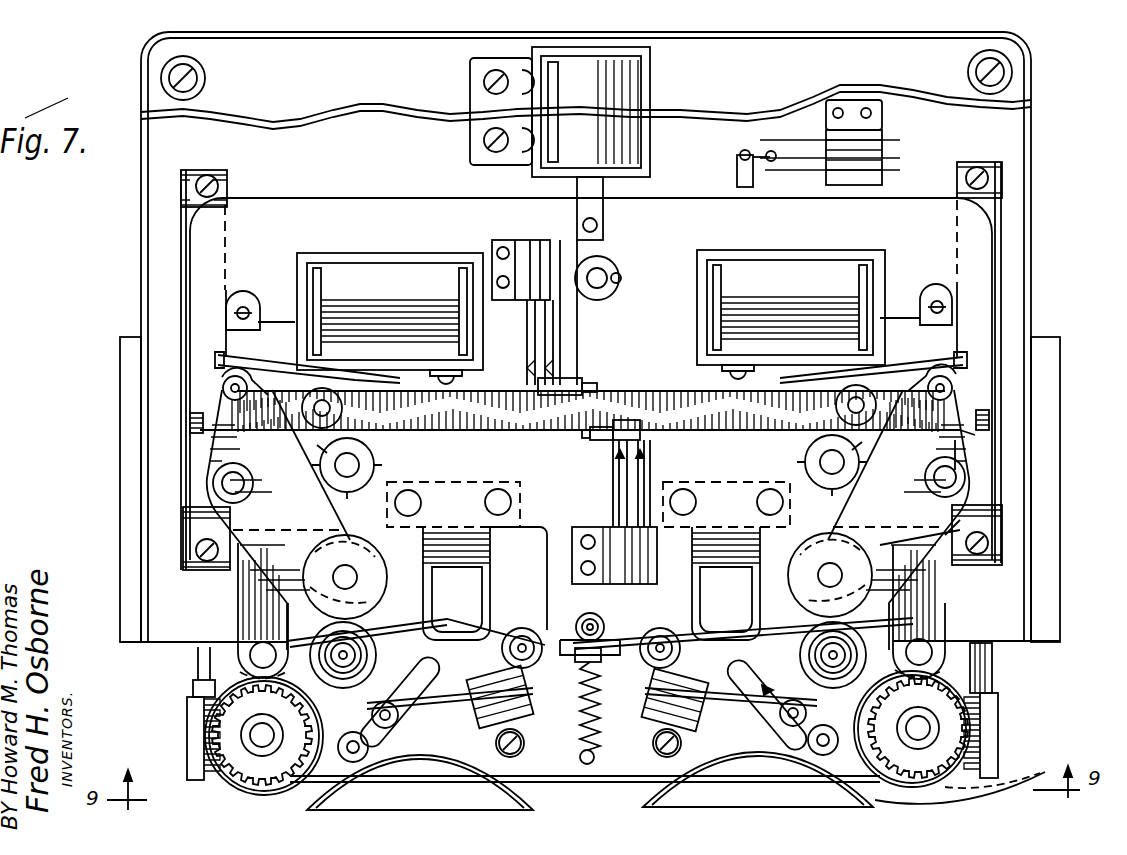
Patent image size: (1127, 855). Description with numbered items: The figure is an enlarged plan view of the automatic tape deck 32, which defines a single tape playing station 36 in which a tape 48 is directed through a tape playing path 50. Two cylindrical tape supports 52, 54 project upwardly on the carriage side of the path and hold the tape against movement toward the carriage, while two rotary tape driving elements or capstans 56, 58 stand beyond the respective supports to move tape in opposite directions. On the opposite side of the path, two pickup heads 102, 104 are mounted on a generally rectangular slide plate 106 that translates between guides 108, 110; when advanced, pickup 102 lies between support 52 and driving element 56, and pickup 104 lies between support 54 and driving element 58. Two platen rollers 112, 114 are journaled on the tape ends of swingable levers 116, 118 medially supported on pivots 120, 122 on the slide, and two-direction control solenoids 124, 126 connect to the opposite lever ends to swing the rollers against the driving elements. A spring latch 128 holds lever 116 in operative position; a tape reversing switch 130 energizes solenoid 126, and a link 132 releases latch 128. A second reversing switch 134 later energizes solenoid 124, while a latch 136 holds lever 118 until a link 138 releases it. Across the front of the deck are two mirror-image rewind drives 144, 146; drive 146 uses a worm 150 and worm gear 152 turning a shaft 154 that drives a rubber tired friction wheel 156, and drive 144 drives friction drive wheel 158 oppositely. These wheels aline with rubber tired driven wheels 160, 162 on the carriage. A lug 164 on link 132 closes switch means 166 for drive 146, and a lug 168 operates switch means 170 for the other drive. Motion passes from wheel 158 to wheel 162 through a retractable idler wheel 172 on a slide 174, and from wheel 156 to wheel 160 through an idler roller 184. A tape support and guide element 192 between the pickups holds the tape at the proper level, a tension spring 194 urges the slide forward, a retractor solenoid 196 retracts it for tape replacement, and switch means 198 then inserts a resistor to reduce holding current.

The tape deck 32 is at (108, 433).
The tape playing station 36 is at (240, 620).
The tape 48 is at (390, 618).
The tape playing path 50 is at (628, 645).
The tape support 52 is at (530, 666).
The tape support 54 is at (707, 640).
The tape driving element 56 is at (372, 644).
The tape driving element 58 is at (852, 585).
The pickup head 102 is at (452, 573).
The pickup head 104 is at (722, 540).
The slide plate 106 is at (303, 208).
The guide 108 is at (185, 292).
The guide 110 is at (998, 308).
The platen roller 112 is at (313, 567).
The platen roller 114 is at (945, 521).
The swingable lever 116 is at (300, 501).
The swingable lever 118 is at (900, 507).
The pivot 120 is at (240, 480).
The pivot 122 is at (932, 476).
The control solenoid 124 is at (378, 275).
The control solenoid 126 is at (800, 275).
The spring latch 128 is at (274, 392).
The tape reversing switch 130 is at (405, 700).
The link 132 is at (955, 445).
The second reversing switch 134 is at (777, 707).
The latch 136 is at (932, 310).
The link 138 is at (423, 420).
The rewind drive 144 is at (182, 708).
The rewind drive 146 is at (1002, 688).
The worm 150 is at (998, 725).
The worm gear 152 is at (1050, 764).
The shaft 154 is at (925, 723).
The friction wheel 156 is at (1033, 790).
The friction drive wheel 158 is at (238, 790).
The driven wheel 160 is at (770, 793).
The driven wheel 162 is at (430, 797).
The lug 164 is at (595, 383).
The switch means 166 is at (575, 343).
The lug 168 is at (593, 437).
The switch means 170 is at (665, 462).
The idler wheel 172 is at (443, 763).
The slide 174 is at (407, 730).
The idler roller 184 is at (793, 743).
The tape support and guide element 192 is at (593, 614).
The tension spring 194 is at (600, 712).
The retractor solenoid 196 is at (627, 92).
The switch means 198 is at (745, 145).